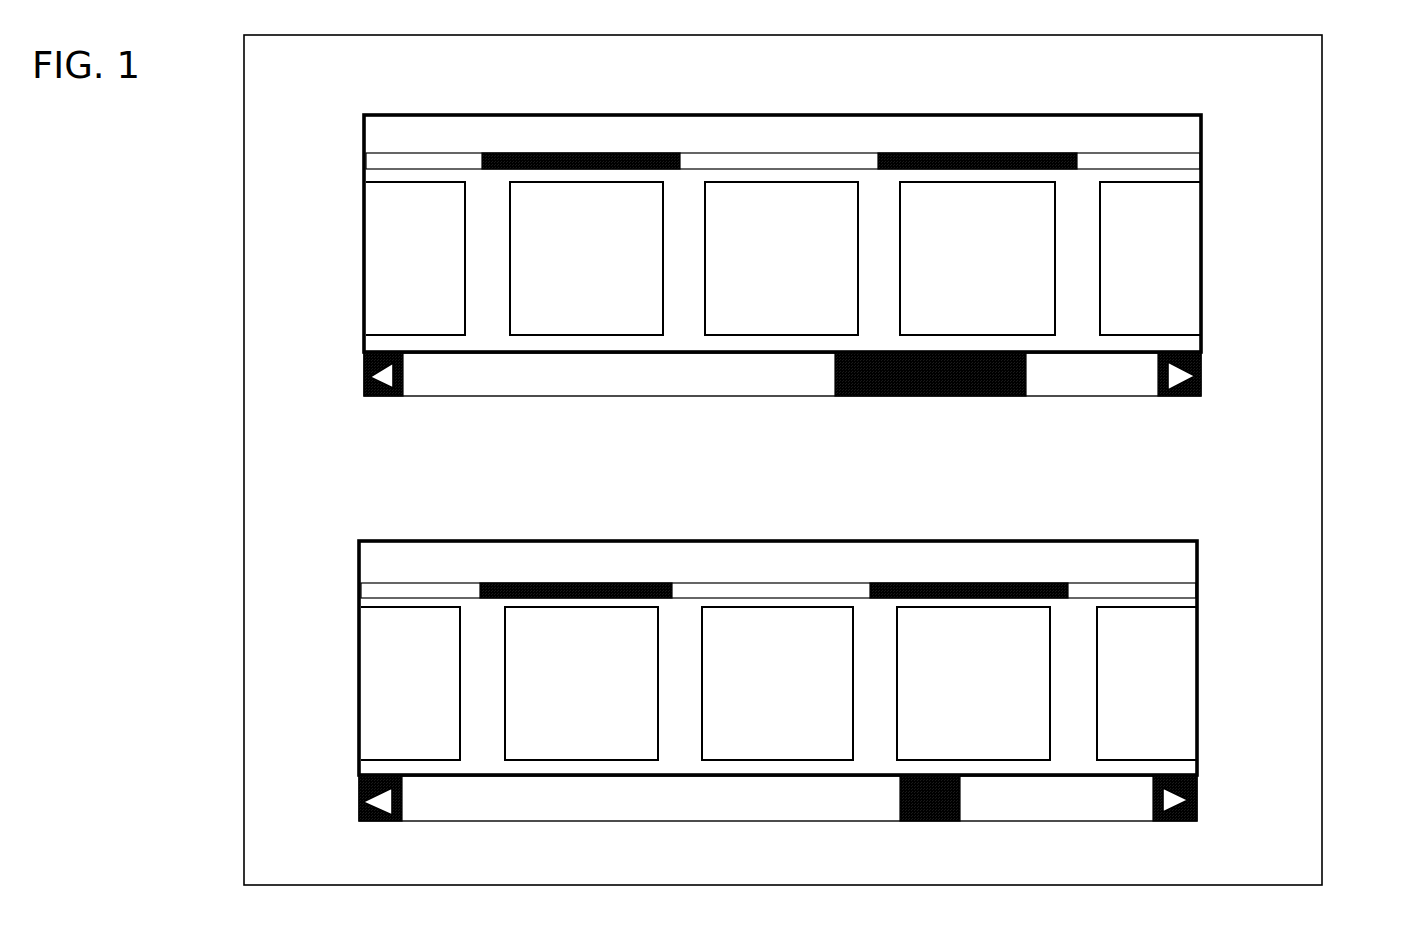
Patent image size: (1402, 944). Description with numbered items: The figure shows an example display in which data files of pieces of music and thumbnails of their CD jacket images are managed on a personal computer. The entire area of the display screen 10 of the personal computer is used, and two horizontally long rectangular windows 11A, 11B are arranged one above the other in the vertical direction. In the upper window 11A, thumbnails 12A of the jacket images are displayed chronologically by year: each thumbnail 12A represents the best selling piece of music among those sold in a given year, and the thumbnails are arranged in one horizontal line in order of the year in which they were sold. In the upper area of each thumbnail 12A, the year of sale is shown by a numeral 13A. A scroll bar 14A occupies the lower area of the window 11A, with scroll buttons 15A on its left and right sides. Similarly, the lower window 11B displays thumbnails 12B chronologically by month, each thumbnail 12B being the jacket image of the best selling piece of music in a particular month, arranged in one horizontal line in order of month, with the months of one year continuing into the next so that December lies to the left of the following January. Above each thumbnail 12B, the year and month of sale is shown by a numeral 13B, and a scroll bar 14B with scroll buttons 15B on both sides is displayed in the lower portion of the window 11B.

The display screen 10 is at (1323, 632).
The window 11A is at (796, 260).
The window 11B is at (804, 680).
The thumbnails 12A is at (632, 336).
The thumbnails 12B is at (629, 762).
The numeral 13A is at (580, 126).
The numeral 13B is at (558, 554).
The scroll bar 14A is at (975, 388).
The scroll bar 14B is at (942, 810).
The scroll buttons 15A is at (388, 384).
The scroll buttons 15B is at (383, 806).